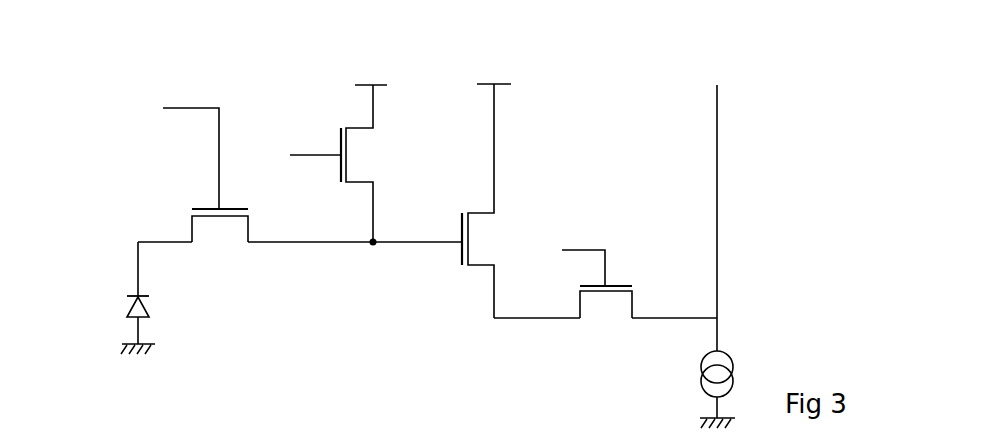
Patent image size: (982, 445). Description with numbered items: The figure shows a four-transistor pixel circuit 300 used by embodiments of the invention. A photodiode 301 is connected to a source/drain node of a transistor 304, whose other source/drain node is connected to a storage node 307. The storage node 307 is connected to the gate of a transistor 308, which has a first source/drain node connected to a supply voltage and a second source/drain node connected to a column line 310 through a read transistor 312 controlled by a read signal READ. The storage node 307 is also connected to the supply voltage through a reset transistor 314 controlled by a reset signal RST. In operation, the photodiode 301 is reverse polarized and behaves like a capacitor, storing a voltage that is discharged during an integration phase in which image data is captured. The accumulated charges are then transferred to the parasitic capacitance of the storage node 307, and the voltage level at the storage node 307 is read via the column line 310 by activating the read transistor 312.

The pixel circuit 300 is at (120, 62).
The photodiode 301 is at (125, 306).
The transistor 304 is at (218, 224).
The storage node 307 is at (374, 247).
The transistor 308 is at (480, 240).
The column line 310 is at (715, 212).
The read transistor 312 is at (607, 308).
The reset transistor 314 is at (353, 156).